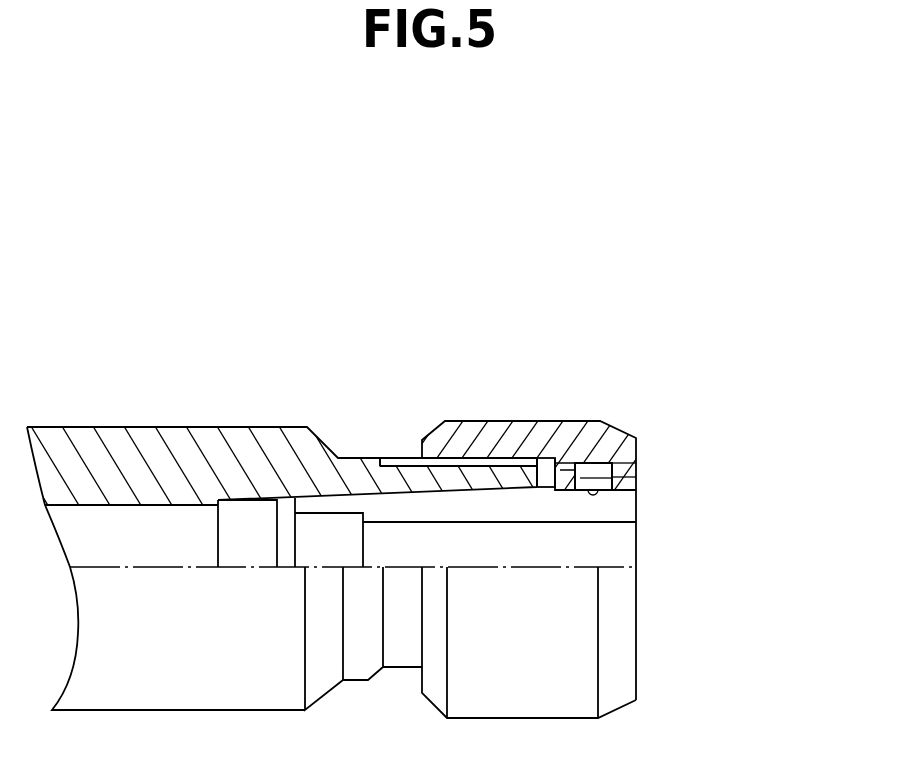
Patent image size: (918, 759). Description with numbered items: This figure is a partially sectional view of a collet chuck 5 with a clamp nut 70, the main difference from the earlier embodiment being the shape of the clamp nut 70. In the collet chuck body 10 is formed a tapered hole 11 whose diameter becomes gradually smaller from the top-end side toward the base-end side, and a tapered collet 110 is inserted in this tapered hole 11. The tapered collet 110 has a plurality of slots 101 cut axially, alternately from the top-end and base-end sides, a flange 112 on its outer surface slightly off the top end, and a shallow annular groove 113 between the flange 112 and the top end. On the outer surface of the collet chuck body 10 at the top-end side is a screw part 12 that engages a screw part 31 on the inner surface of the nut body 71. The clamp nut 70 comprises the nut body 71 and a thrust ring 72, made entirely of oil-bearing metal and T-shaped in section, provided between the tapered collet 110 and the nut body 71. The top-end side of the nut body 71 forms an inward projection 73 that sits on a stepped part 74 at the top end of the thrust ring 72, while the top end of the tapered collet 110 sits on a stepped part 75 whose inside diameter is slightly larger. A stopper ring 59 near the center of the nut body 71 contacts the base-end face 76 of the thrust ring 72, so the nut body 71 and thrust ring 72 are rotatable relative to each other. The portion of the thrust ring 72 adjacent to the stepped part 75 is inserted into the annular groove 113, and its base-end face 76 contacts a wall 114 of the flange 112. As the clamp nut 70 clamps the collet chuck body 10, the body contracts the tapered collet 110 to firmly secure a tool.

The collet chuck 5 is at (624, 188).
The collet chuck body 10 is at (184, 445).
The tapered hole 11 is at (376, 500).
The screw part 12 is at (437, 462).
The screw part 31 is at (465, 455).
The stopper ring 59 is at (565, 470).
The clamp nut 70 is at (792, 365).
The nut body 71 is at (620, 442).
The thrust ring 72 is at (637, 480).
The projection 73 is at (627, 455).
The stepped part 74 is at (632, 477).
The stepped part 75 is at (635, 483).
The base-end face 76 is at (580, 489).
The slots 101 is at (410, 507).
The tapered collet 110 is at (623, 510).
The flange 112 is at (552, 455).
The annular groove 113 is at (600, 470).
The wall 114 is at (580, 477).